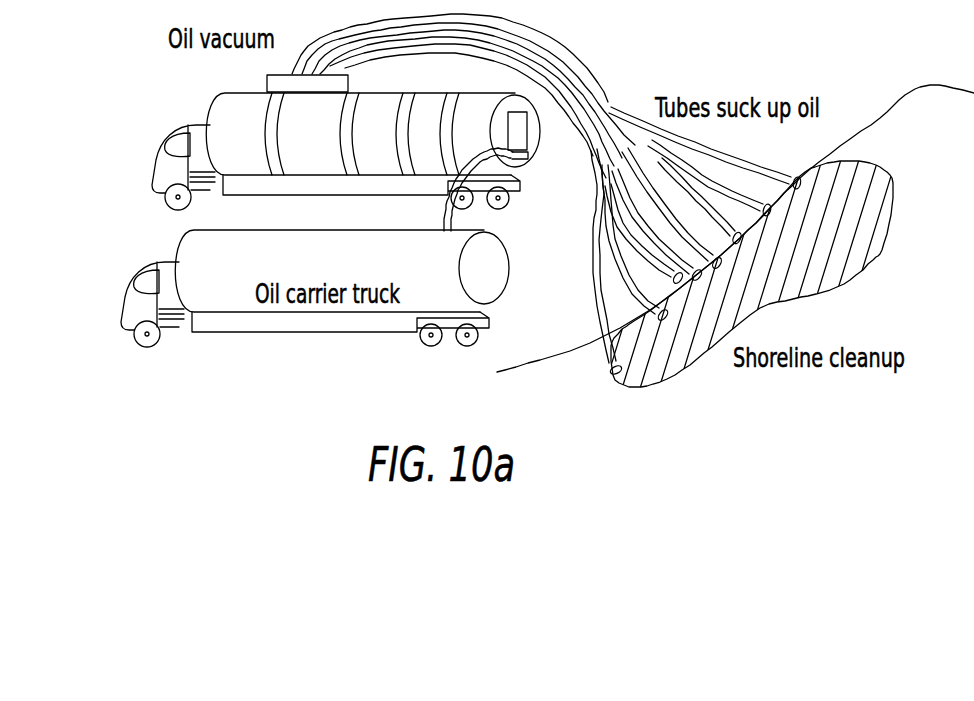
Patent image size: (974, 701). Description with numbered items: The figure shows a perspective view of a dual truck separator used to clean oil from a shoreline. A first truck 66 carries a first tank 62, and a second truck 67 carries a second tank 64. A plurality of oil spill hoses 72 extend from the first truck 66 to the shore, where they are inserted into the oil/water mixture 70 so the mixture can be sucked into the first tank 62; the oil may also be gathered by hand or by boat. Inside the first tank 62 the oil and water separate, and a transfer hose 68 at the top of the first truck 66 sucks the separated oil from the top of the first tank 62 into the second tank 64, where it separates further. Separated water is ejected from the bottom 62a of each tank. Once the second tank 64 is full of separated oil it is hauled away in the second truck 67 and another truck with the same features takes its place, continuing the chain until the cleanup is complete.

The first tank 62 is at (387, 122).
The bottom of tank 62a is at (503, 193).
The second tank 64 is at (193, 257).
The first truck 66 is at (190, 145).
The second truck 67 is at (137, 300).
The transfer hose 68 is at (449, 142).
The oil/water mixture 70 is at (830, 233).
The oil spill hoses 72 is at (616, 108).